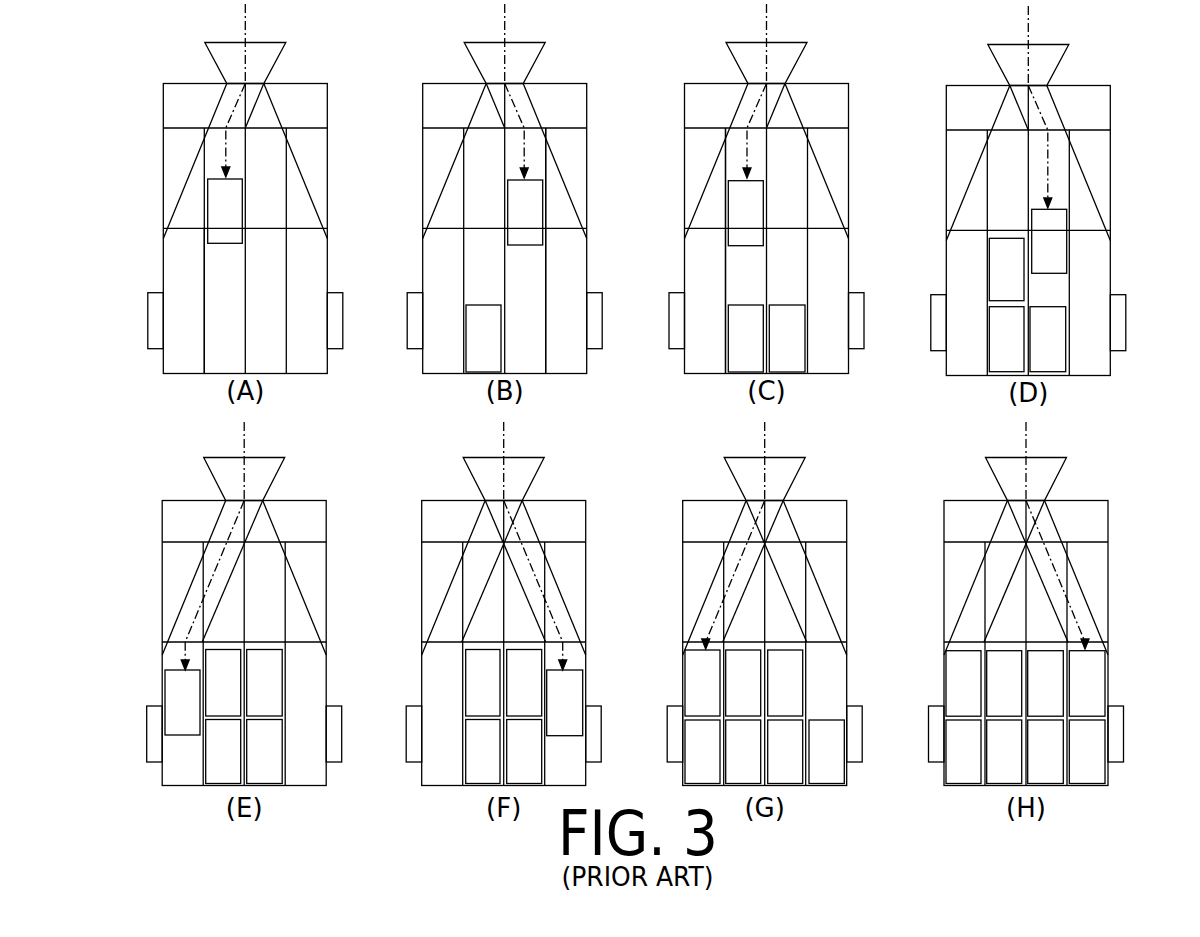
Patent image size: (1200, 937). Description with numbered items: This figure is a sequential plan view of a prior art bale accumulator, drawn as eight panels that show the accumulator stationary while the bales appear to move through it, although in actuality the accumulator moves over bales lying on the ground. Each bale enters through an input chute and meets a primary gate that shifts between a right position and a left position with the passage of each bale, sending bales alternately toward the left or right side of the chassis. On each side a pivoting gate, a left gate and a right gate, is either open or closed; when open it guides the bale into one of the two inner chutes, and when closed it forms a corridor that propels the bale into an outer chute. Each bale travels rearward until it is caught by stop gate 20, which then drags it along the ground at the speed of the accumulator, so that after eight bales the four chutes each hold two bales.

The stop gate 20 is at (267, 237).